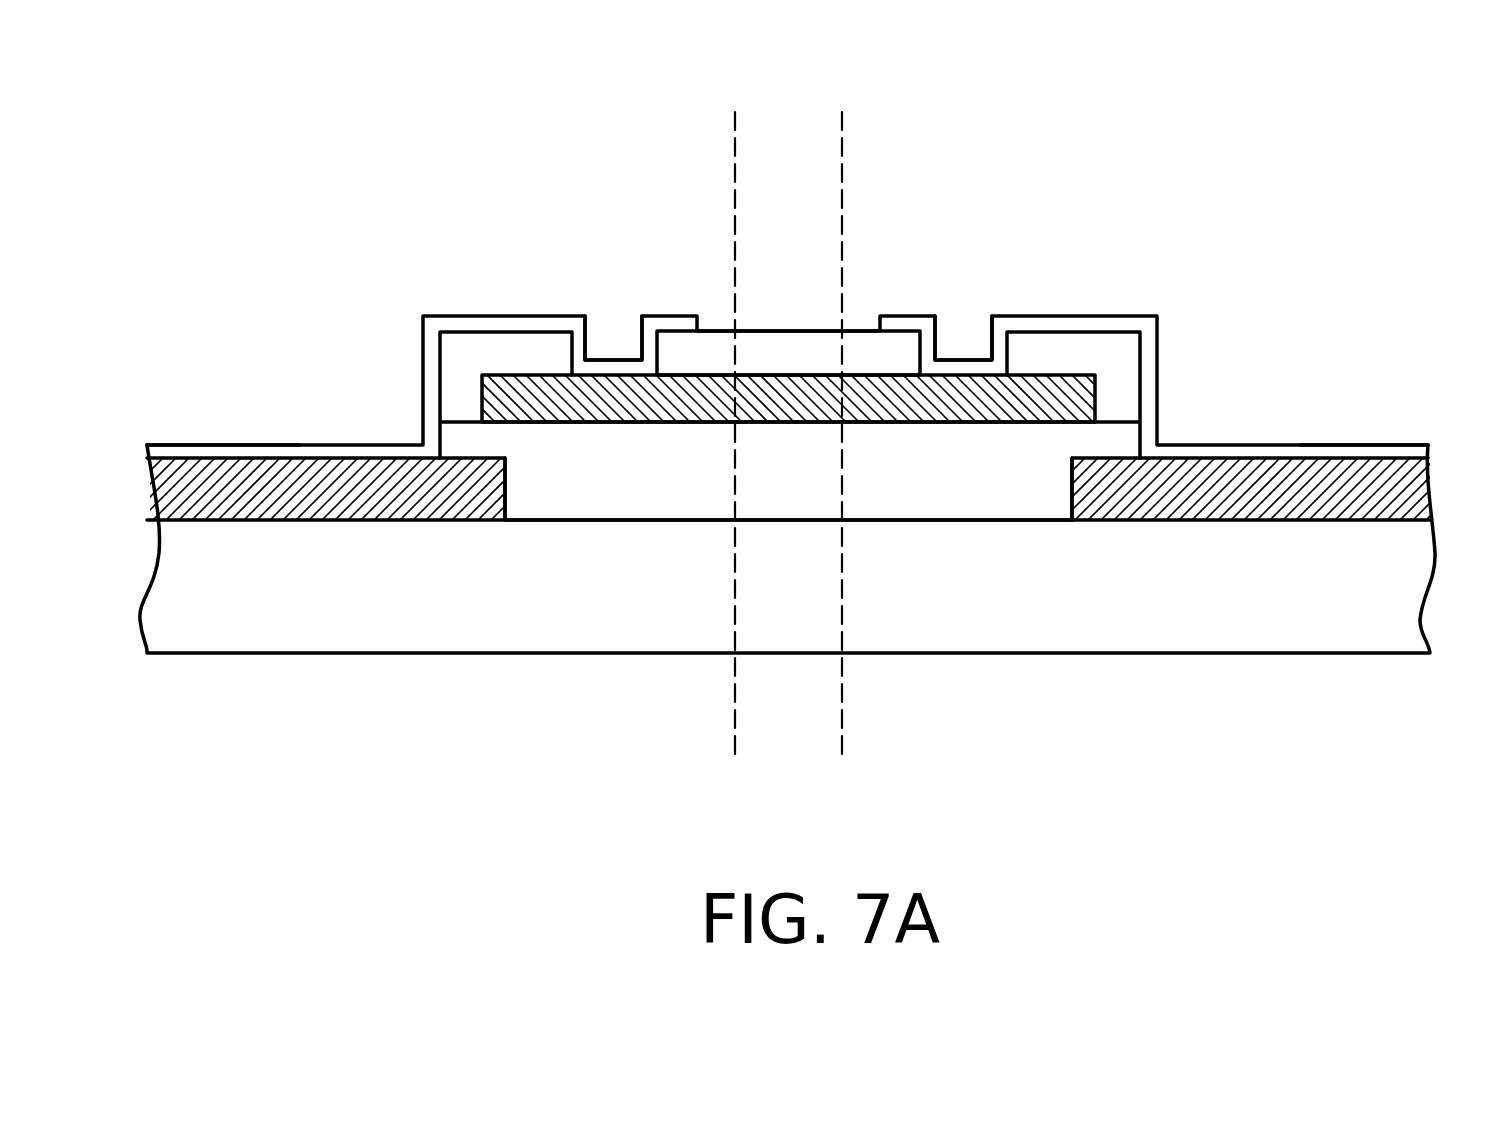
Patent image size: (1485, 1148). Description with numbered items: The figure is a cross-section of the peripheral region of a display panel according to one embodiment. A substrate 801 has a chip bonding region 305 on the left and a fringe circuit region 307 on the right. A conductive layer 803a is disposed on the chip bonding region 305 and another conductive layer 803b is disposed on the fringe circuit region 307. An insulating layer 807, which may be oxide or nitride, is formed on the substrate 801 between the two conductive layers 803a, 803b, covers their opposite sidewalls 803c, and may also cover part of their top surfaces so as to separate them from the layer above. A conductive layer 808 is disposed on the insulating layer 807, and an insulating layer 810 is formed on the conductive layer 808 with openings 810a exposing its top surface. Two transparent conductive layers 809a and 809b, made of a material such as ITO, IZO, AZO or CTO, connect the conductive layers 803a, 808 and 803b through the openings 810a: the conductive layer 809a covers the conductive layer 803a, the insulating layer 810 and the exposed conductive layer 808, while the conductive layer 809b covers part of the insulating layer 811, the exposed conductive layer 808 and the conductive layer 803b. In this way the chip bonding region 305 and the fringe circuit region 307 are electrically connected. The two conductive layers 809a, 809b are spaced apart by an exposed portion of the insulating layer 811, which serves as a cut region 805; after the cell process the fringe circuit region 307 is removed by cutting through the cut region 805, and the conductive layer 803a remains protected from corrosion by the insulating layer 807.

The chip bonding region 305 is at (297, 343).
The fringe circuit region 307 is at (1282, 340).
The substrate 801 is at (1333, 623).
The conductive layer 803a is at (428, 507).
The conductive layer 803b is at (1147, 502).
The opposite sidewalls 803c is at (508, 483).
The cut region 805 is at (843, 93).
The insulating layer 807 is at (900, 500).
The conductive layer 808 is at (783, 400).
The conductive layer 809a is at (548, 323).
The conductive layer 809b is at (1032, 323).
The insulating layer 810 is at (467, 348).
The openings 810a is at (567, 350).
The insulating layer 811 is at (792, 357).